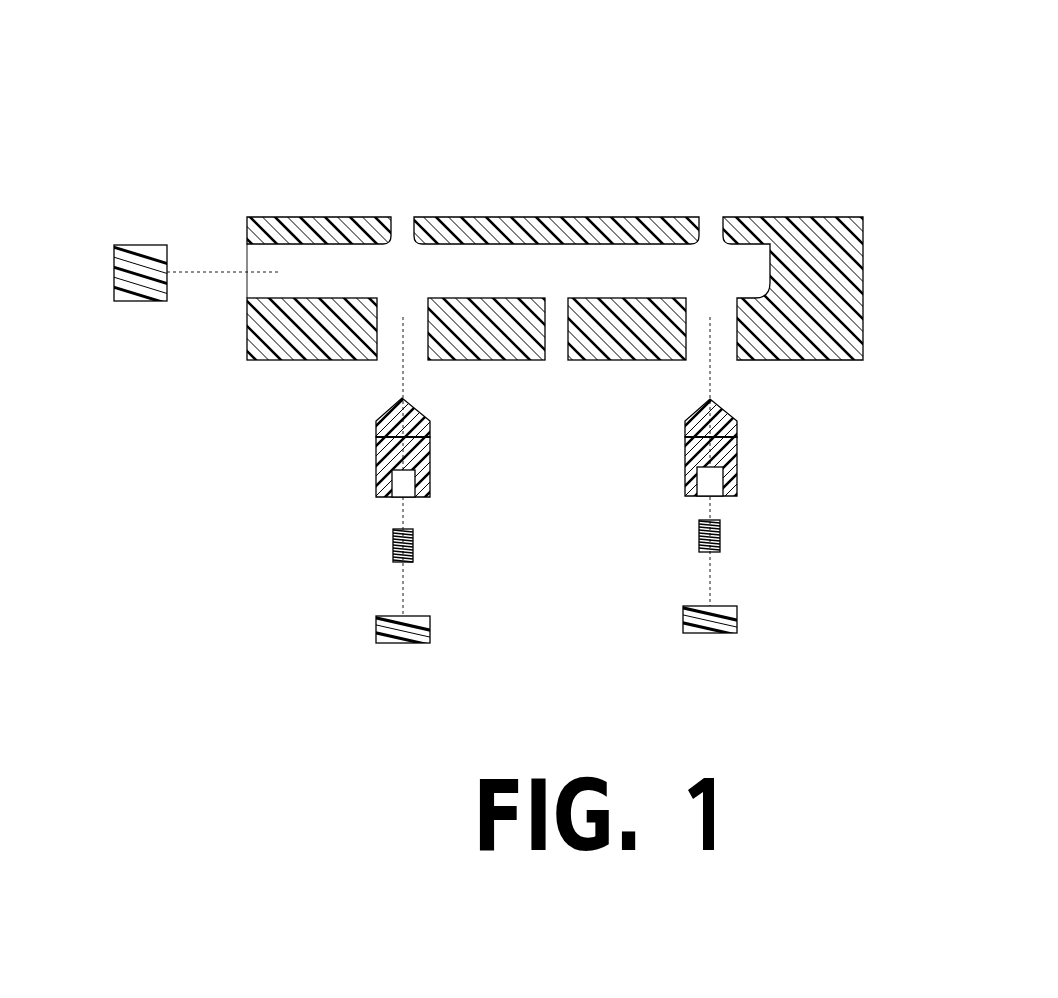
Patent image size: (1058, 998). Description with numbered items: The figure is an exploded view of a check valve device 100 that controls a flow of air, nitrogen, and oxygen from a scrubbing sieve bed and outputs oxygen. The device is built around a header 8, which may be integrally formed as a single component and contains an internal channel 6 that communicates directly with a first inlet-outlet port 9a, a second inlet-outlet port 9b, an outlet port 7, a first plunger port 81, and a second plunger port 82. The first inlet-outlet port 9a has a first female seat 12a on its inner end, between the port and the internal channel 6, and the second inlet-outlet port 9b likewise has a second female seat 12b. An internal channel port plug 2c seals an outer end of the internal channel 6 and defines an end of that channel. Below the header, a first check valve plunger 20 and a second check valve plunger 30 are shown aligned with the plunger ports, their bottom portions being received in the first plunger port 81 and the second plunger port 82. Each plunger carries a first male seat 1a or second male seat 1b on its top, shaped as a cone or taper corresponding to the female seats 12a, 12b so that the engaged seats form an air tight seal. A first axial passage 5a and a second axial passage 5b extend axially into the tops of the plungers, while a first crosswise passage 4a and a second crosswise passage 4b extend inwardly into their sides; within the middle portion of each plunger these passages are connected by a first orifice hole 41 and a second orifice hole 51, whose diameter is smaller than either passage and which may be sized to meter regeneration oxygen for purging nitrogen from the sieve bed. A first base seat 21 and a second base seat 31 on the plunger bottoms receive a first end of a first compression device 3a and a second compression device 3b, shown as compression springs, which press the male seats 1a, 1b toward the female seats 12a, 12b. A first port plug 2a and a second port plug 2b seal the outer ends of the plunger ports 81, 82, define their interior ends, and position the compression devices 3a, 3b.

The check valve device 100 is at (512, 147).
The header 8 is at (863, 287).
The internal channel 6 is at (505, 272).
The outlet port 7 is at (553, 360).
The first inlet-outlet port 9a is at (398, 218).
The second inlet-outlet port 9b is at (715, 218).
The first female seat 12a is at (365, 218).
The second female seat 12b is at (755, 218).
The first plunger port 81 is at (407, 333).
The second plunger port 82 is at (697, 340).
The first male seat 1a is at (374, 466).
The second male seat 1b is at (724, 461).
The first check valve plunger 20 is at (377, 436).
The second check valve plunger 30 is at (737, 437).
The first base seat 21 is at (396, 486).
The second base seat 31 is at (723, 497).
The first orifice hole 41 is at (376, 428).
The second orifice hole 51 is at (737, 453).
The first crosswise passage 4a is at (378, 463).
The second crosswise passage 4b is at (697, 470).
The first axial passage 5a is at (430, 438).
The second axial passage 5b is at (687, 438).
The first compression device 3a is at (414, 547).
The second compression device 3b is at (700, 537).
The first port plug 2a is at (402, 640).
The second port plug 2b is at (710, 632).
The internal channel port plug 2c is at (115, 287).